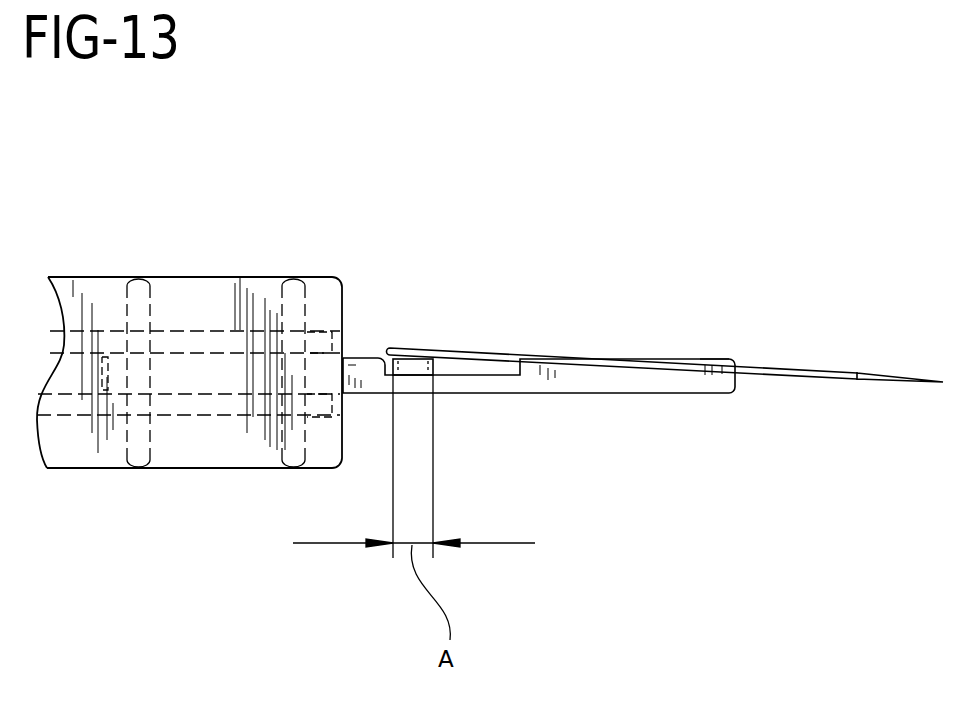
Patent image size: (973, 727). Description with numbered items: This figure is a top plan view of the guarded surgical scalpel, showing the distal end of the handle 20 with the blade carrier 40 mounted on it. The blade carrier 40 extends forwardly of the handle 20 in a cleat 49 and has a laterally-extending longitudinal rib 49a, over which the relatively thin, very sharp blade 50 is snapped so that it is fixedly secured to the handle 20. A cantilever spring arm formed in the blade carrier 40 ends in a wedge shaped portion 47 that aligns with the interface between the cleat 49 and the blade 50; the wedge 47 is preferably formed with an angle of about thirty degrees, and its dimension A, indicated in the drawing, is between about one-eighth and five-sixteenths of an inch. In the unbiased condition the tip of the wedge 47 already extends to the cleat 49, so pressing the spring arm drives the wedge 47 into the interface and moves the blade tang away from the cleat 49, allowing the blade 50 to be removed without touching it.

The handle 20 is at (82, 278).
The blade carrier 40 is at (700, 395).
The wedge shaped portion 47 is at (412, 366).
The cleat 49 is at (600, 385).
The longitudinal rib 49a is at (718, 360).
The blade 50 is at (886, 370).